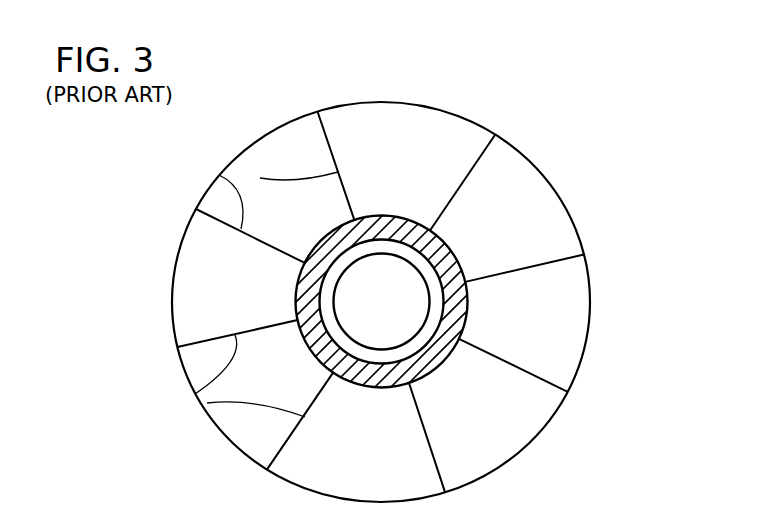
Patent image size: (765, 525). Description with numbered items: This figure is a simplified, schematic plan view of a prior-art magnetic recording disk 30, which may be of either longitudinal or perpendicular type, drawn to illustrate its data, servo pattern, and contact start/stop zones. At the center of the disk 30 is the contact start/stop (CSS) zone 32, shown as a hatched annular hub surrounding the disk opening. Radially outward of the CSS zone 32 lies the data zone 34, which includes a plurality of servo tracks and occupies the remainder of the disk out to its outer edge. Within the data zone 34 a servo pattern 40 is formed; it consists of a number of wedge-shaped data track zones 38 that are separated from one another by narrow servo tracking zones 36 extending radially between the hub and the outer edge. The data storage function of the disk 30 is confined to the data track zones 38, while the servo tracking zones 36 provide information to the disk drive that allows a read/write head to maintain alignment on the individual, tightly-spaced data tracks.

The magnetic recording disk 30 is at (576, 137).
The contact start/stop (CSS) zone 32 is at (460, 315).
The data zone 34 is at (510, 412).
The servo tracking zones 36 is at (222, 176).
The data track zones 38 is at (313, 147).
The servo pattern 40 is at (238, 289).